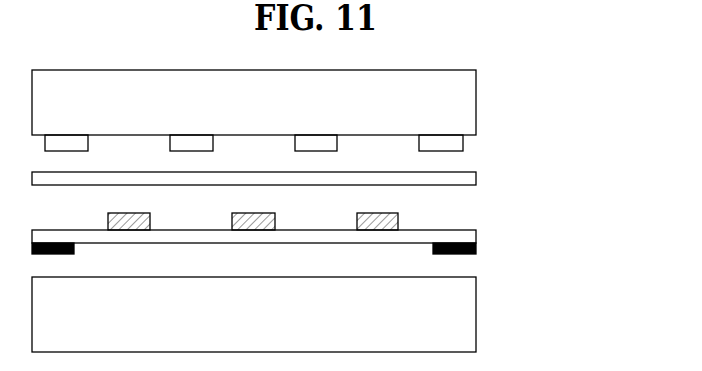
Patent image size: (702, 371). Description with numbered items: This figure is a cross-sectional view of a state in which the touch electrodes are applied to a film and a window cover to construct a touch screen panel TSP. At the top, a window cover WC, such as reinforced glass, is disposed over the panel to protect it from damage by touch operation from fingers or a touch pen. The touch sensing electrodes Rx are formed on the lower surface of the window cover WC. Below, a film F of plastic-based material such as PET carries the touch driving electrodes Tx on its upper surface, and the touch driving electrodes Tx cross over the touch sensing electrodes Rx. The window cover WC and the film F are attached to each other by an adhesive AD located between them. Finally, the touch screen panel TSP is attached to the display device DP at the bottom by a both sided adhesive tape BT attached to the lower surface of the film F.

The window cover WC is at (464, 101).
The touch sensing electrodes Rx is at (463, 142).
The adhesive AD is at (464, 178).
The touch driving electrodes Tx is at (398, 220).
The film F is at (465, 238).
The both sided adhesive tape BT is at (476, 251).
The display device DP is at (465, 311).
The touch screen panel TSP is at (557, 97).